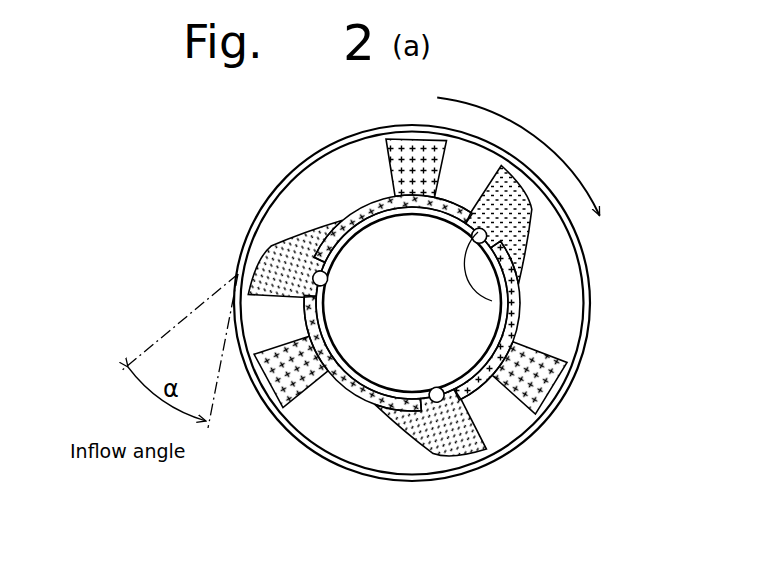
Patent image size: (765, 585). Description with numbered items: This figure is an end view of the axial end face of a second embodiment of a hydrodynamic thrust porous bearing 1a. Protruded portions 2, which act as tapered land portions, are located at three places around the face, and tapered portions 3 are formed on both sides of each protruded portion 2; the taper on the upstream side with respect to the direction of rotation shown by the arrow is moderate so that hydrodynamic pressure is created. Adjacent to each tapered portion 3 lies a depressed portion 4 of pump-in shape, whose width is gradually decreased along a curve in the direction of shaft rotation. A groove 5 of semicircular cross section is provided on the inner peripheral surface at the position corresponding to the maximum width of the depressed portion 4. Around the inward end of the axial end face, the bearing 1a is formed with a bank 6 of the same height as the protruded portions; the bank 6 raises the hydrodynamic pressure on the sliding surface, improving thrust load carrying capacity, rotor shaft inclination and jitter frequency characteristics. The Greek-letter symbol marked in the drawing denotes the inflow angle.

The hydrodynamic thrust porous bearing 1a is at (293, 165).
The protruded portion 2 is at (406, 140).
The tapered portion 3 is at (472, 157).
The depressed portion 4 is at (527, 243).
The groove 5 is at (492, 301).
The bank 6 is at (350, 220).